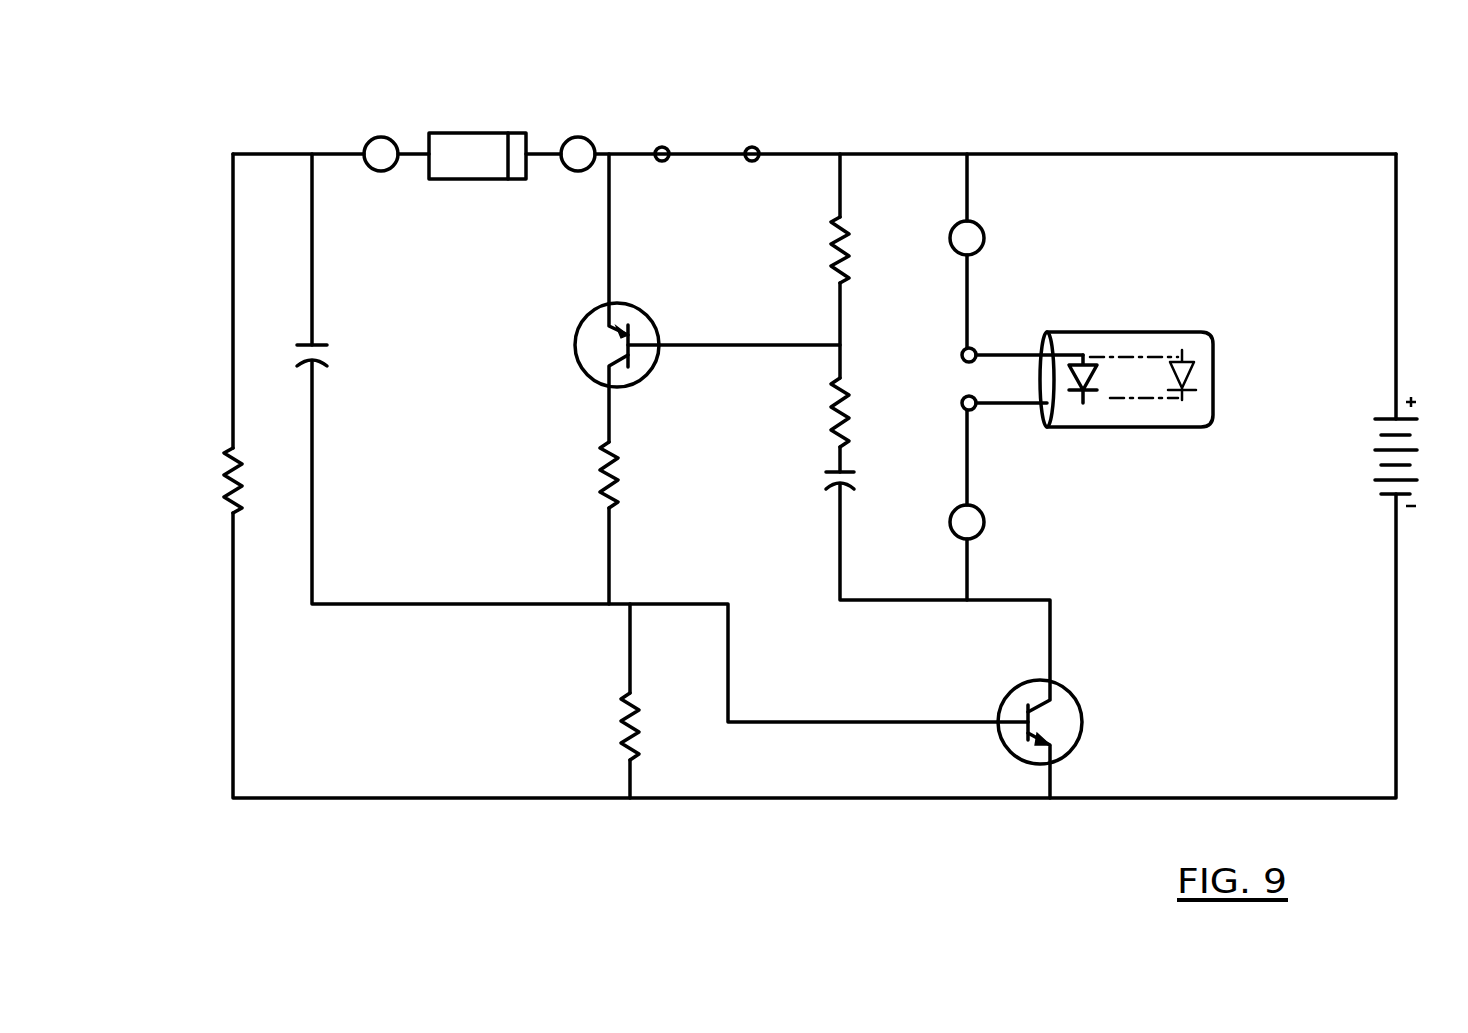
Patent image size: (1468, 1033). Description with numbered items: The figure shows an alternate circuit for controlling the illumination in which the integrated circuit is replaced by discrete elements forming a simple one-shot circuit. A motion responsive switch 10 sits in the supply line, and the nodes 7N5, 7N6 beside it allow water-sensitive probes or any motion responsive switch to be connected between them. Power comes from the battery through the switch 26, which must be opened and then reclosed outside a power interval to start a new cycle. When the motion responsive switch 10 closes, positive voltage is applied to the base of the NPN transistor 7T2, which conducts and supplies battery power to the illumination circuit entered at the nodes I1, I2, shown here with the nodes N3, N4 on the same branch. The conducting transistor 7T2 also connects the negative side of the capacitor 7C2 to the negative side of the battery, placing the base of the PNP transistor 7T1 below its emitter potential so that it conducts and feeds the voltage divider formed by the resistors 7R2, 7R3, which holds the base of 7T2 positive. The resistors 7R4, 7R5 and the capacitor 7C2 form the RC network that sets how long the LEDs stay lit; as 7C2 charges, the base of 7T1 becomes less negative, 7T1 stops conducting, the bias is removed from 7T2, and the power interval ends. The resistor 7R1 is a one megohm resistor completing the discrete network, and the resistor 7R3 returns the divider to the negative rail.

The motion responsive switch 10 is at (478, 130).
The node 7N5 is at (663, 146).
The node 7N6 is at (752, 146).
The resistor 7R1 is at (228, 480).
The resistor 7R2 is at (620, 492).
The resistor 7R3 is at (622, 725).
The resistor 7R4 is at (846, 228).
The resistor 7R5 is at (850, 420).
The capacitor 7C2 is at (858, 478).
The PNP transistor 7T1 is at (644, 318).
The NPN transistor 7T2 is at (1078, 700).
The node N3 is at (986, 238).
The node N4 is at (986, 522).
The node I1 is at (977, 350).
The node I2 is at (972, 412).
The switch 26 is at (1407, 432).